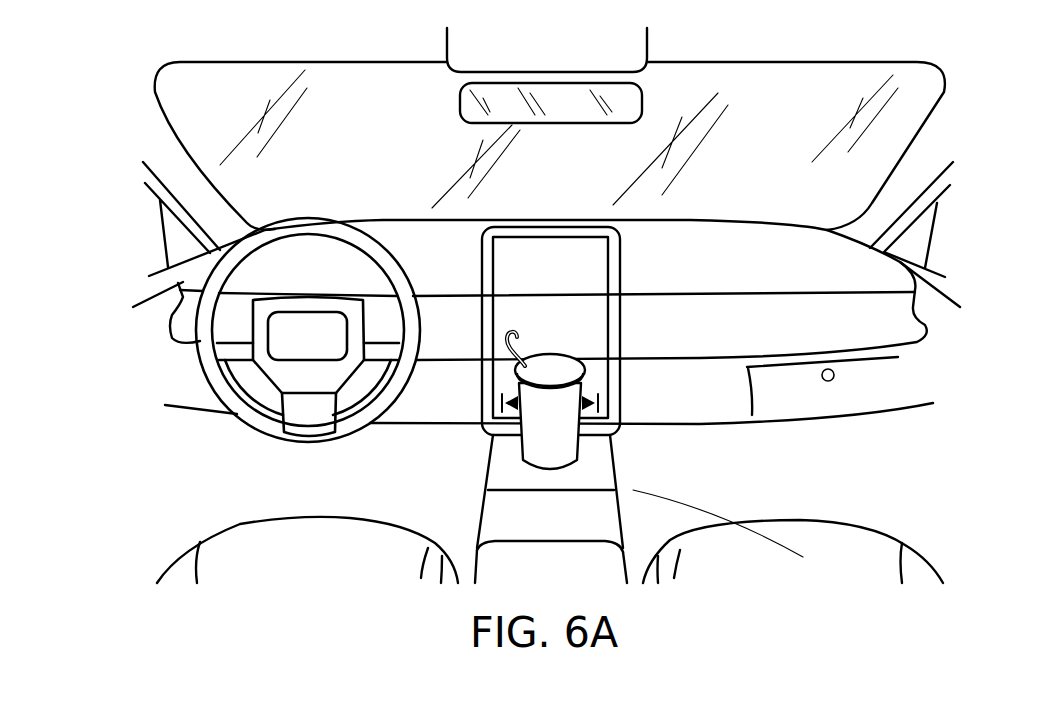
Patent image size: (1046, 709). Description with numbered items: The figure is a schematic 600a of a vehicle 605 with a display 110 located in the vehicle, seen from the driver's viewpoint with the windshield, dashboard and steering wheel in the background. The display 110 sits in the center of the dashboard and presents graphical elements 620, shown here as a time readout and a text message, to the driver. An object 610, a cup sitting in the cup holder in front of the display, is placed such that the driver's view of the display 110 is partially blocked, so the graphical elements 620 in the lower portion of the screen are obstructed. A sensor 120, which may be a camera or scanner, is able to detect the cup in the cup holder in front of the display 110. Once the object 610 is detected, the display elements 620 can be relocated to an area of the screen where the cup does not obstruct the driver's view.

The schematic 600a is at (124, 101).
The vehicle 605 is at (190, 273).
The sensor 120 is at (545, 223).
The display 110 is at (610, 327).
The graphical elements 620 is at (583, 284).
The object 610 is at (567, 427).